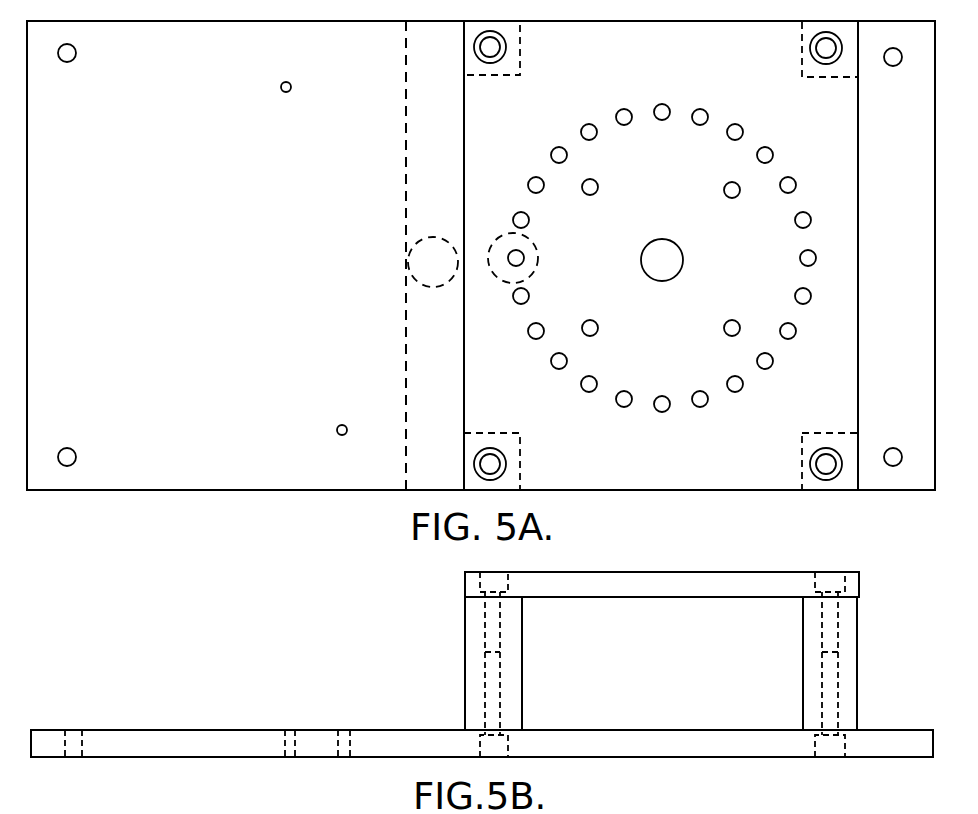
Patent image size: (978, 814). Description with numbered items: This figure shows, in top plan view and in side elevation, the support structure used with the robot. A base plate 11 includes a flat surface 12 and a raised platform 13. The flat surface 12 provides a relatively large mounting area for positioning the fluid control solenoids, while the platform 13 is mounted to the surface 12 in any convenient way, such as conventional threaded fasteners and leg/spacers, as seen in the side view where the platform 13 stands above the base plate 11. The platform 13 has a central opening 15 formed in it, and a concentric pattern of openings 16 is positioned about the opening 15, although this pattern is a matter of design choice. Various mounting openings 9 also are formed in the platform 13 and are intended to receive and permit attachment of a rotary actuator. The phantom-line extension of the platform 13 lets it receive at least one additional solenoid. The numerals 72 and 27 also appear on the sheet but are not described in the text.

In FIG. 5A, the mounting openings 9 is at (597, 184).
In FIG. 5A, the base plate 11 is at (368, 458).
In FIG. 5B, the base plate 11 is at (172, 730).
In FIG. 5A, the flat surface 12 is at (230, 449).
In FIG. 5A, the raised platform 13 is at (404, 193).
In FIG. 5B, the raised platform 13 is at (726, 588).
In FIG. 5A, the central opening 15 is at (676, 268).
In FIG. 5A, the concentric pattern of openings 16 is at (668, 410).
In FIG. 5A, the locating hole 72 is at (531, 246).
In FIG. 5B, the reference numeral 27 is at (778, 813).